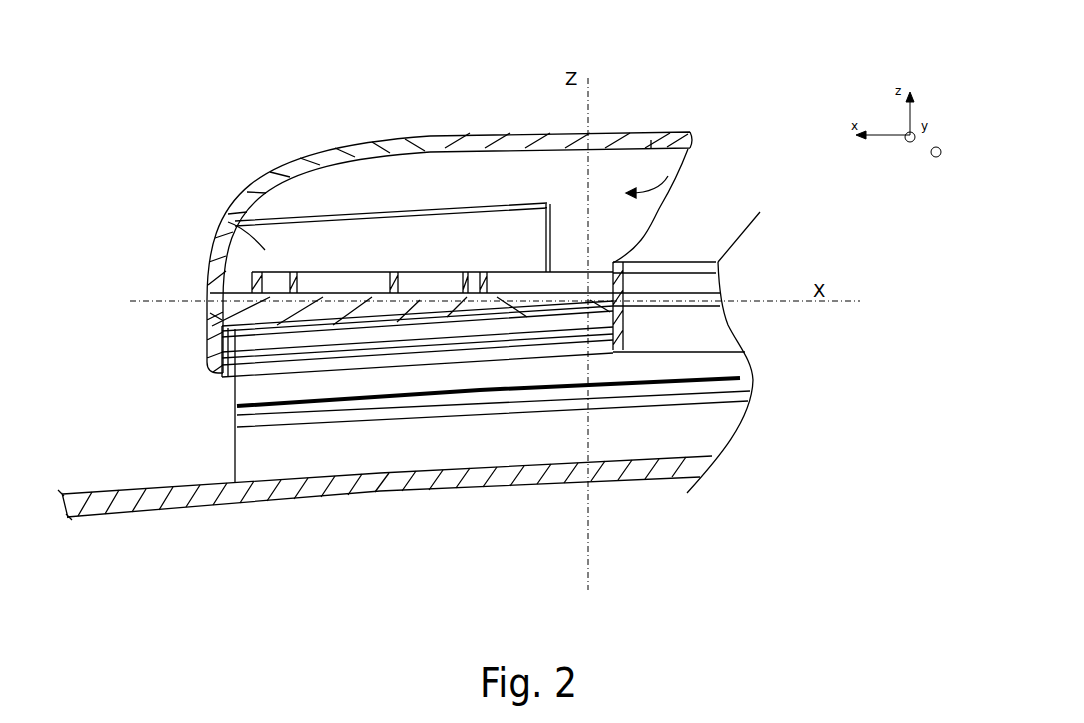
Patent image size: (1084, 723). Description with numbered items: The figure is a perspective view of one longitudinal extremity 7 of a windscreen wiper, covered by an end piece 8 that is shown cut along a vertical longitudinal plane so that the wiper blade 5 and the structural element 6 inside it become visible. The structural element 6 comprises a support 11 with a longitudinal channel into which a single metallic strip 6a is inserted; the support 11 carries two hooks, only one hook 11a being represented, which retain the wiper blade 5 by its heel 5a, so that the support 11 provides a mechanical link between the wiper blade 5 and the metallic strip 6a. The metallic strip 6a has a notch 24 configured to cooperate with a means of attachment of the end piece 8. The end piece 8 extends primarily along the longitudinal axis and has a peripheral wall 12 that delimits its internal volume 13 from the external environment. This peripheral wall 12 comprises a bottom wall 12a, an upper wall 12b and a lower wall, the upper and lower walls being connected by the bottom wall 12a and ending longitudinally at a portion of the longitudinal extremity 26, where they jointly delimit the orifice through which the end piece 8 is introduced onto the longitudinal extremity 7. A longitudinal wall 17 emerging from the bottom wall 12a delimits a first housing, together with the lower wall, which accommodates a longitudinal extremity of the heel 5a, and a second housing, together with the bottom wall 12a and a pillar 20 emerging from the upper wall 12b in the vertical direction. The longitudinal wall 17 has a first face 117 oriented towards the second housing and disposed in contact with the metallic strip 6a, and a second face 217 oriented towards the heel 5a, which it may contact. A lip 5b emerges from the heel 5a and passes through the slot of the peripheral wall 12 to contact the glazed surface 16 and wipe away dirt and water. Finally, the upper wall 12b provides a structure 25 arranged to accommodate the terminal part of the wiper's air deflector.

The end piece 8 is at (243, 67).
The peripheral wall 12 is at (430, 133).
The upper wall 12b is at (526, 132).
The bottom wall 12a is at (207, 342).
The notch 24 is at (417, 273).
The pillar 20 is at (303, 233).
The metallic strip 6a is at (228, 222).
The first face 117 is at (217, 253).
The longitudinal wall 17 is at (210, 313).
The second face 217 is at (217, 372).
The wiper blade 5 is at (738, 379).
The heel 5a is at (233, 388).
The lip 5b is at (235, 470).
The glazed surface 16 is at (257, 497).
The longitudinal extremity 7 is at (327, 537).
The internal volume 13 is at (694, 147).
The structure 25 is at (651, 140).
The portion of the longitudinal extremity 26 is at (693, 134).
The support 11 is at (715, 270).
The structural element 6 is at (730, 292).
The hook 11a is at (720, 333).